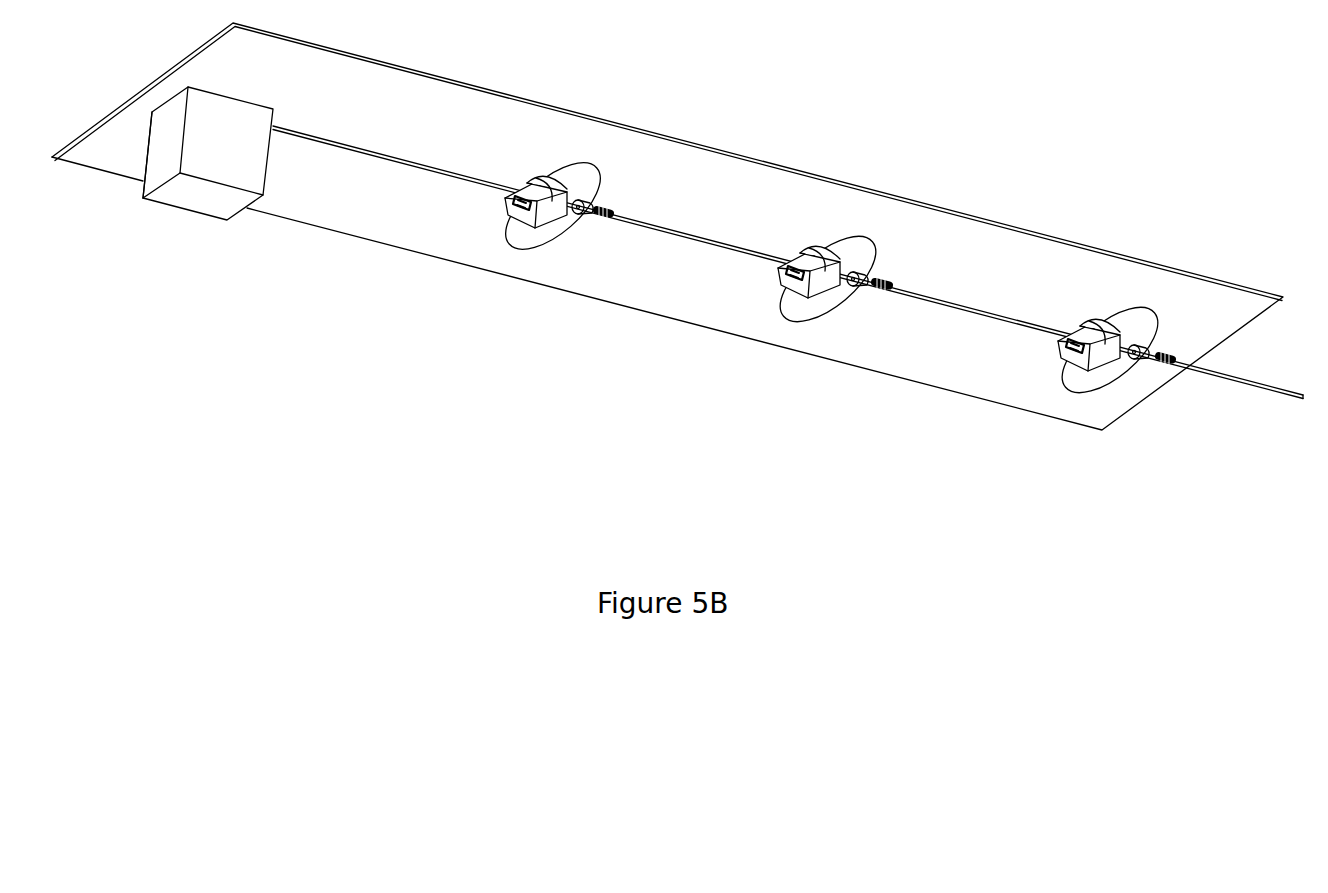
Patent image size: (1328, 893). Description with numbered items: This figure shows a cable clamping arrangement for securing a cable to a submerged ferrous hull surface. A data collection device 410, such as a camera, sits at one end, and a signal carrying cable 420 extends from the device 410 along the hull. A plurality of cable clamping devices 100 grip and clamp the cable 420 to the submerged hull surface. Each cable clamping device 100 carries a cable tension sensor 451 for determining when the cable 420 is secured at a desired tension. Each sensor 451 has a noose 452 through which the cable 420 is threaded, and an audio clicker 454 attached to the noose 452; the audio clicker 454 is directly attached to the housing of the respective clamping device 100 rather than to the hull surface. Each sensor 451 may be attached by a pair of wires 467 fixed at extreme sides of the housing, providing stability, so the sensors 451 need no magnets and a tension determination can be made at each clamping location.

The cable clamping device 100 is at (543, 192).
The data collection device 410 is at (224, 162).
The signal carrying cable 420 is at (667, 232).
The cable tension sensor 451 is at (597, 205).
The noose 452 is at (887, 283).
The audio clicker 454 is at (863, 287).
The wires 467 is at (862, 240).